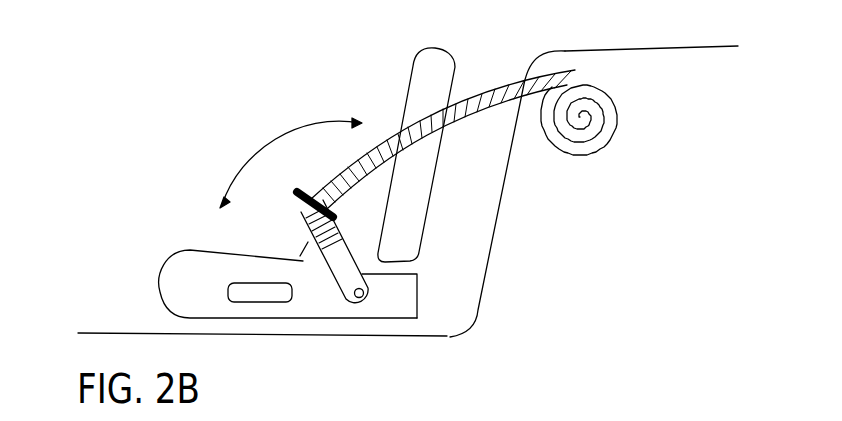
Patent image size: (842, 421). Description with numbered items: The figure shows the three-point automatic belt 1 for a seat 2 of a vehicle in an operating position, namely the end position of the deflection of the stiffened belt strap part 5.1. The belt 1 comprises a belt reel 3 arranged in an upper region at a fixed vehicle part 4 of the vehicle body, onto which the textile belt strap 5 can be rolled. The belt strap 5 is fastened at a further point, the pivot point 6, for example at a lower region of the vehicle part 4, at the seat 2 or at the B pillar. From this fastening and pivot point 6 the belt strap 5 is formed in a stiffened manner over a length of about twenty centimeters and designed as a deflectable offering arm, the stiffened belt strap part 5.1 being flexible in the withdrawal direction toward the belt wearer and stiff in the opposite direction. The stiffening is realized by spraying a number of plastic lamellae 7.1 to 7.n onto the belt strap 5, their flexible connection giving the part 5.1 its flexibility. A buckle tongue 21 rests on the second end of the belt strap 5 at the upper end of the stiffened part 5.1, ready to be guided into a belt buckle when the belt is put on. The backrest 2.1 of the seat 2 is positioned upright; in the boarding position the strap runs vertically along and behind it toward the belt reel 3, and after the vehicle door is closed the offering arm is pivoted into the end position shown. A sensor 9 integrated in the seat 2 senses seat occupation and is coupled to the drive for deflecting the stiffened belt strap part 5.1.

The three-point automatic belt 1 is at (142, 142).
The seat 2 is at (157, 264).
The backrest 2.1 is at (418, 67).
The buckle tongue 21 is at (303, 189).
The belt reel 3 is at (626, 120).
The fixed vehicle part 4 is at (692, 50).
The belt strap 5 is at (483, 113).
The stiffened belt strap part 5.1 is at (337, 231).
The pivot point 6 is at (366, 306).
The plastic lamella 7.1 is at (417, 274).
The plastic lamella 7.n is at (300, 256).
The sensor 9 is at (262, 295).